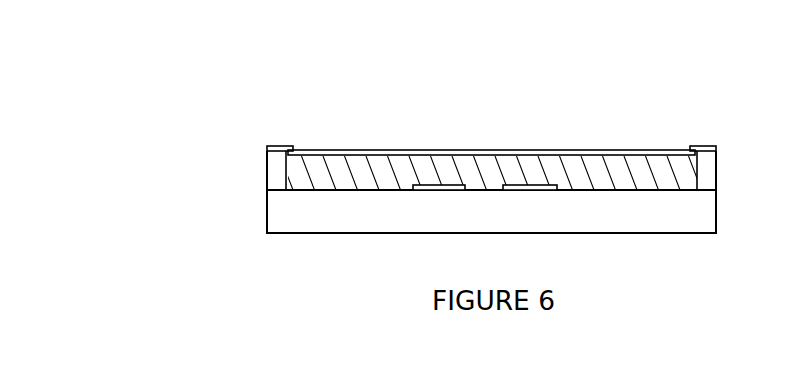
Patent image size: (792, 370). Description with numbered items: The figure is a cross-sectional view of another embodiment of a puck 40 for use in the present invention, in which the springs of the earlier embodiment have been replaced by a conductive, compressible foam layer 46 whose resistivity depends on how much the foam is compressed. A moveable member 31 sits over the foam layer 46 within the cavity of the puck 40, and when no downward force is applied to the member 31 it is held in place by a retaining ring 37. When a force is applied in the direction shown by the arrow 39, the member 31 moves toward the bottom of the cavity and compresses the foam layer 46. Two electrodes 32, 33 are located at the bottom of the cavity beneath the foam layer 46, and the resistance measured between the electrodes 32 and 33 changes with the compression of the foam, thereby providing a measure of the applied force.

The puck 40 is at (240, 100).
The retaining ring 37 is at (278, 144).
The member 31 is at (344, 150).
The conductive, compressible foam layer 46 is at (612, 168).
The arrow 39 is at (488, 139).
The electrode 33 is at (455, 190).
The electrode 32 is at (523, 190).